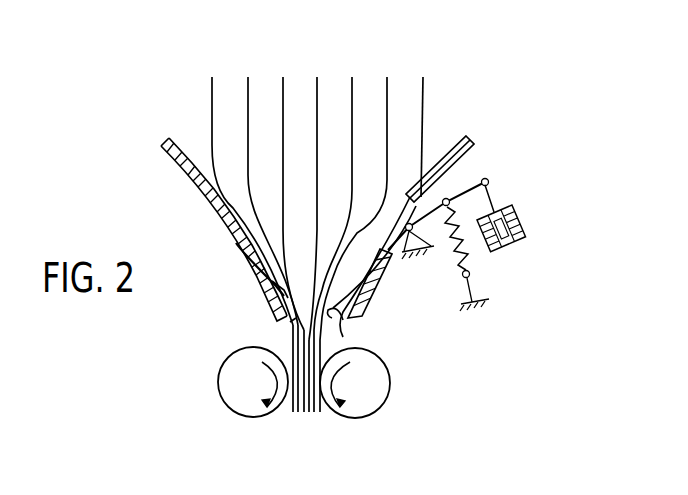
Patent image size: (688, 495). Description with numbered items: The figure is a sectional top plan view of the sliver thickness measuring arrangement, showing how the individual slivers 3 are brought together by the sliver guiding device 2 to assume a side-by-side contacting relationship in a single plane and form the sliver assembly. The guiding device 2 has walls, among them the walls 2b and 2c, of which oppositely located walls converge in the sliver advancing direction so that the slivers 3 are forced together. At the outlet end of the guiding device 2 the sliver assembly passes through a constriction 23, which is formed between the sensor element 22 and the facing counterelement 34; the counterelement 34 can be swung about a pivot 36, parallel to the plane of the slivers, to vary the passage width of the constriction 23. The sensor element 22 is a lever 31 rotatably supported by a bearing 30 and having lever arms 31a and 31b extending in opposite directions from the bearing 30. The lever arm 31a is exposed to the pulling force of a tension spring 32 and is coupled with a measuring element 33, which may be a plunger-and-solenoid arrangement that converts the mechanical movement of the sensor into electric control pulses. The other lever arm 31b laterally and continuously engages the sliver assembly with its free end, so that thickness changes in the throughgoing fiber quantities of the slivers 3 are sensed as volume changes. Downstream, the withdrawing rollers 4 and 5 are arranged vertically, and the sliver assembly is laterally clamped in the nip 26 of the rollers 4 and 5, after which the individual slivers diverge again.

The sliver guiding device 2 is at (190, 177).
The wall 2b is at (467, 145).
The wall 2c is at (163, 141).
The slivers 3 is at (412, 124).
The withdrawing roller 4 is at (373, 397).
The withdrawing roller 5 is at (238, 377).
The sensor element 22 is at (340, 316).
The constriction 23 is at (302, 323).
The nip 26 is at (293, 415).
The bearing 30 is at (418, 253).
The lever 31 is at (468, 173).
The lever arm 31a is at (489, 180).
The lever arm 31b is at (388, 256).
The tension spring 32 is at (471, 255).
The measuring element 33 is at (522, 217).
The counterelement 34 is at (272, 282).
The pivot 36 is at (235, 242).